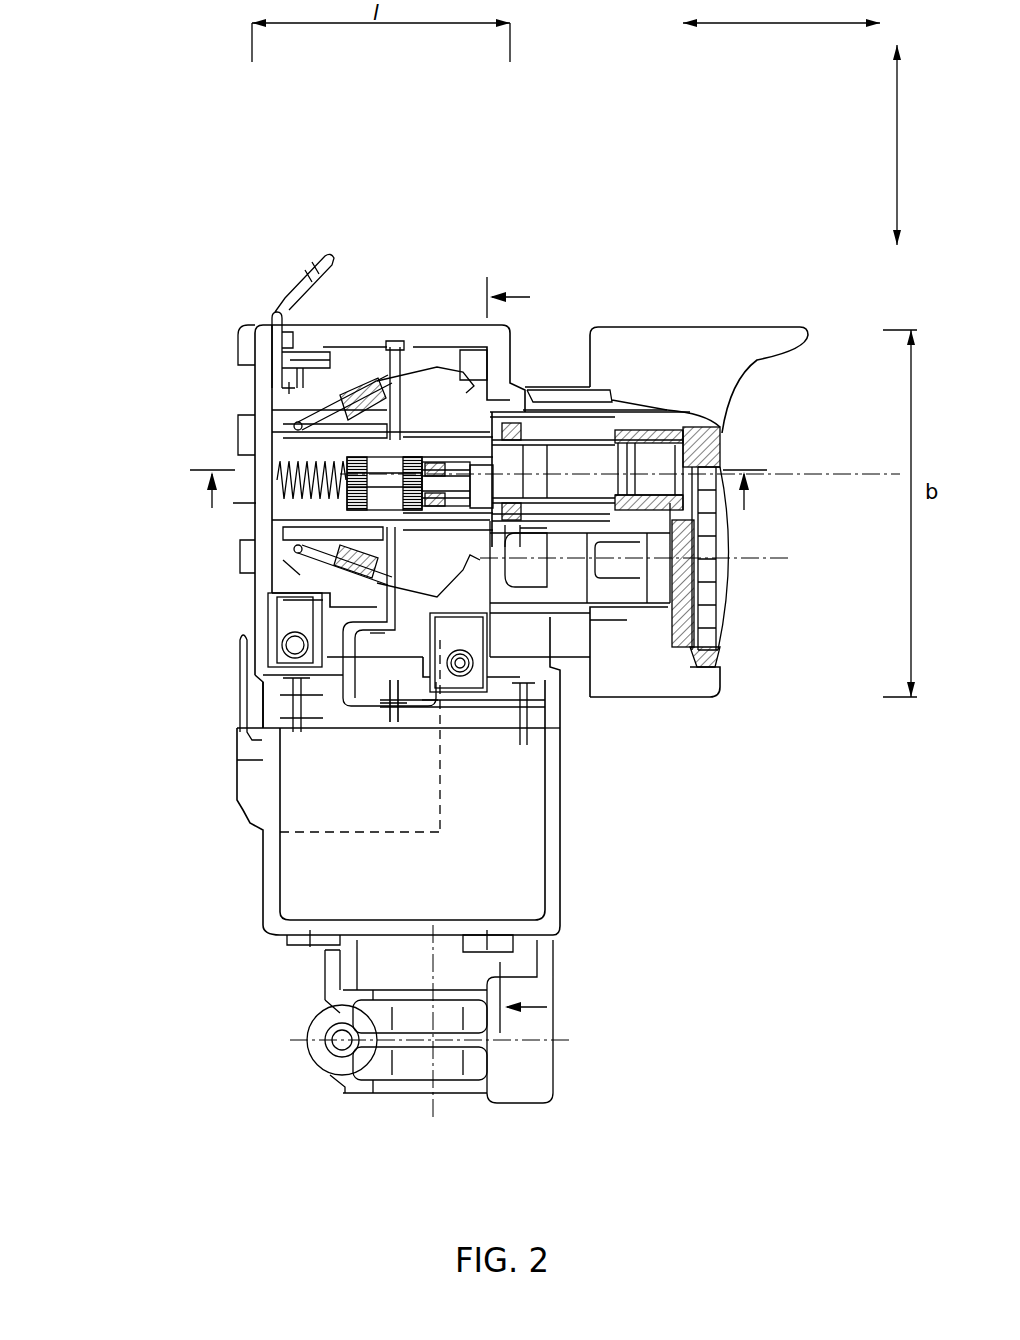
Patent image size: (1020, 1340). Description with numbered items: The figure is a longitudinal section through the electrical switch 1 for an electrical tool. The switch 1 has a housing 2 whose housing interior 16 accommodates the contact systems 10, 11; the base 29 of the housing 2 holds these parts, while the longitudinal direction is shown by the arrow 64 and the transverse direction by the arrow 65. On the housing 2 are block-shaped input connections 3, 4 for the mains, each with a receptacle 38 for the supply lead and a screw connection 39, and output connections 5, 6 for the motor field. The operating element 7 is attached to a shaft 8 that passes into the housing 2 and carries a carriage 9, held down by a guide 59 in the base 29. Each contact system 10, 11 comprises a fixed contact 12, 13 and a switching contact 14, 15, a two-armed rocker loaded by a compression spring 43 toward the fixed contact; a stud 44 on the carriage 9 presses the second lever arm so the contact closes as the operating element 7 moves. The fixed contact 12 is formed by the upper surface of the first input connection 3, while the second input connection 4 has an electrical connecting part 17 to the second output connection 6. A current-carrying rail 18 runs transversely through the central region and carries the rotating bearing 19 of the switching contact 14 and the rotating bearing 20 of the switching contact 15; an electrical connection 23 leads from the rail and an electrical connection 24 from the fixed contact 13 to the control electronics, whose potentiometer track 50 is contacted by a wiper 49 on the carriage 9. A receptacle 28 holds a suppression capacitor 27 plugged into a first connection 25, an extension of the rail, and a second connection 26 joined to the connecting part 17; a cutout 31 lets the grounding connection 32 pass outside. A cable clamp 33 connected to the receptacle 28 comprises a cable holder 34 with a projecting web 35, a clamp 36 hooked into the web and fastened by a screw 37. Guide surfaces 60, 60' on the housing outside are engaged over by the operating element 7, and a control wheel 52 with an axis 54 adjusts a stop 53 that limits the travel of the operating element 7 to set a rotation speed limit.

The switch 1 is at (248, 287).
The housing 2 is at (437, 327).
The first input connection 3 is at (262, 627).
The second input connection 4 is at (527, 680).
The first output connection 5 is at (290, 292).
The second output connection 6 is at (398, 713).
The operating element 7 is at (732, 340).
The shaft 8 is at (593, 470).
The carriage 9 is at (250, 443).
The first contact system 10 is at (276, 556).
The second contact system 11 is at (277, 388).
The fixed contact 12 is at (270, 604).
The fixed contact 13 is at (270, 378).
The switching contact 14 is at (276, 578).
The switching contact 15 is at (370, 335).
The housing interior 16 is at (462, 352).
The electrical connecting part 17 is at (430, 710).
The current-carrying rail 18 is at (377, 633).
The rotating bearing 19 is at (300, 583).
The rotating bearing 20 is at (375, 330).
The electrical connection 23 is at (403, 333).
The electrical connection 24 is at (271, 355).
The first connection 25 is at (262, 725).
The second connection 26 is at (553, 762).
The suppression capacitor 27 is at (302, 867).
The receptacle 28 is at (466, 690).
The base 29 is at (470, 403).
The cutout 31 is at (268, 777).
The grounding connection 32 is at (290, 655).
The cable clamp 33 is at (335, 958).
The cable holder 34 is at (345, 1087).
The web 35 is at (518, 1063).
The clamp 36 is at (413, 1062).
The screw 37 is at (330, 1040).
The receptacle 38 is at (553, 832).
The screw connection 39 is at (560, 783).
The compression spring 43 is at (263, 520).
The stud 44 is at (593, 582).
The wiper 49 is at (468, 498).
The potentiometer track 50 is at (270, 450).
The control wheel 52 is at (710, 543).
The stop 53 is at (690, 628).
The axis 54 is at (620, 562).
The guide 59 is at (277, 420).
The guide surface 60 is at (690, 651).
The guide surface 60' is at (611, 242).
The arrow 64 is at (781, 13).
The arrow 65 is at (911, 145).